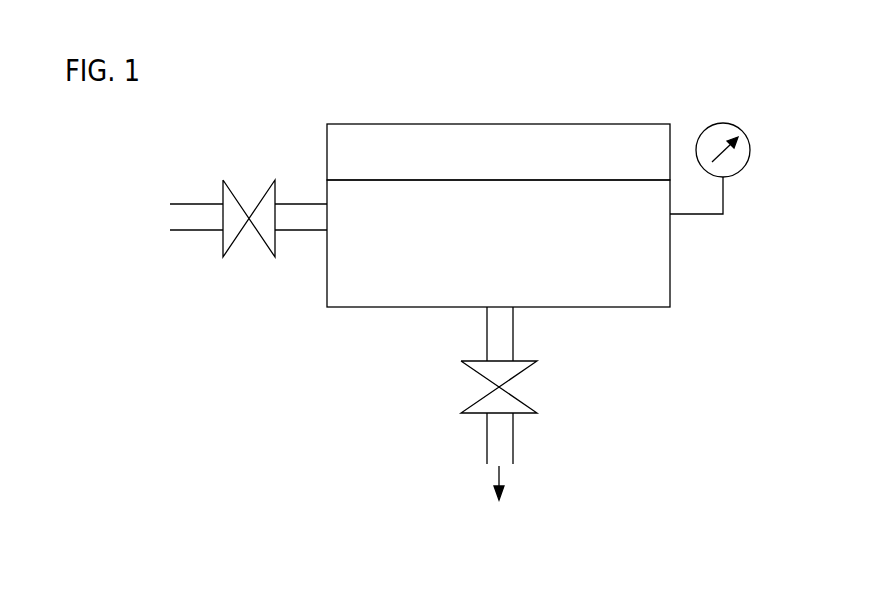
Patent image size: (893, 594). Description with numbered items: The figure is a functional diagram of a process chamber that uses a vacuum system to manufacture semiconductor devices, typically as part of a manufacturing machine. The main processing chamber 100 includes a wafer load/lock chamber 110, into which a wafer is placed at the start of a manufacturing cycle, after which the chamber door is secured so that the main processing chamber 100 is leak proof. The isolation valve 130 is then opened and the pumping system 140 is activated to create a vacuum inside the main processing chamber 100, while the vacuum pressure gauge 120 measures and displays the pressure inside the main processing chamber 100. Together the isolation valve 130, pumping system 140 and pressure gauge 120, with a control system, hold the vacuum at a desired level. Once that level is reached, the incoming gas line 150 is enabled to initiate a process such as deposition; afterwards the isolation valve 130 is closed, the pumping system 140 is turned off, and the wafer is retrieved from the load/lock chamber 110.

The main processing chamber 100 is at (556, 275).
The wafer load/lock chamber 110 is at (556, 175).
The vacuum pressure gauge 120 is at (714, 123).
The isolation valve 130 is at (584, 385).
The pumping system 140 is at (497, 496).
The incoming gas line 150 is at (158, 221).